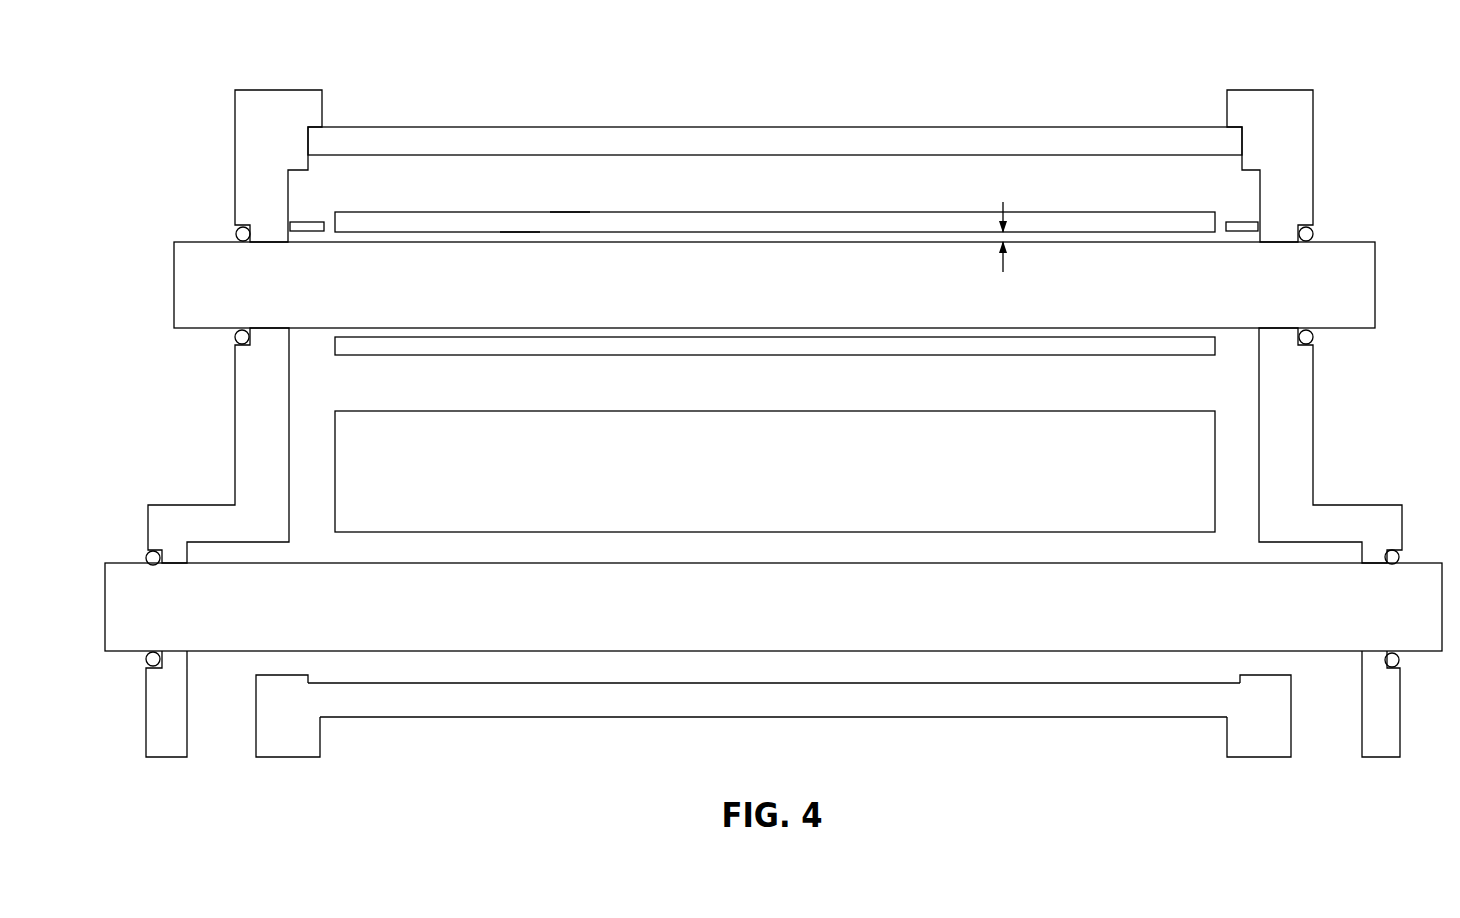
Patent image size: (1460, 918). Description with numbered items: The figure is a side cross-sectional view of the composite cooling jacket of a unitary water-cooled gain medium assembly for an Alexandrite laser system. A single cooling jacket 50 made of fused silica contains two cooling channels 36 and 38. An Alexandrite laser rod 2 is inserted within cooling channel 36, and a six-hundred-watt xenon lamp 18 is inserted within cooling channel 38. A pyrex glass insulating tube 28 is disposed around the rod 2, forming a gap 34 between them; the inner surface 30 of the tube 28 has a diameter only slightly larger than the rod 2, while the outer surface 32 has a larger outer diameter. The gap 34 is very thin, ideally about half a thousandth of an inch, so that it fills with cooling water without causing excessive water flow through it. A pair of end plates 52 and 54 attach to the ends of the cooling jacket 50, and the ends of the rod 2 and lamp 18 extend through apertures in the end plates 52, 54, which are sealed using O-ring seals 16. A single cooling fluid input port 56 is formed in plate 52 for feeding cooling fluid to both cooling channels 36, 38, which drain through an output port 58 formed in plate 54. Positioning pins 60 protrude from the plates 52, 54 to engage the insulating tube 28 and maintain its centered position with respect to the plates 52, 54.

The Alexandrite laser rod 2 is at (768, 306).
The O-ring seals 16 is at (236, 232).
The xenon lamp 18 is at (763, 622).
The insulating tube 28 is at (402, 220).
The inner surface 30 is at (512, 230).
The outer surface 32 is at (566, 212).
The gap 34 is at (1003, 266).
The cooling channel 36 is at (763, 197).
The cooling channel 38 is at (763, 557).
The cooling jacket 50 is at (798, 125).
The end plate 52 is at (273, 88).
The end plate 54 is at (1272, 88).
The cooling fluid input port 56 is at (220, 743).
The output port 58 is at (1327, 743).
The positioning pins 60 is at (309, 222).